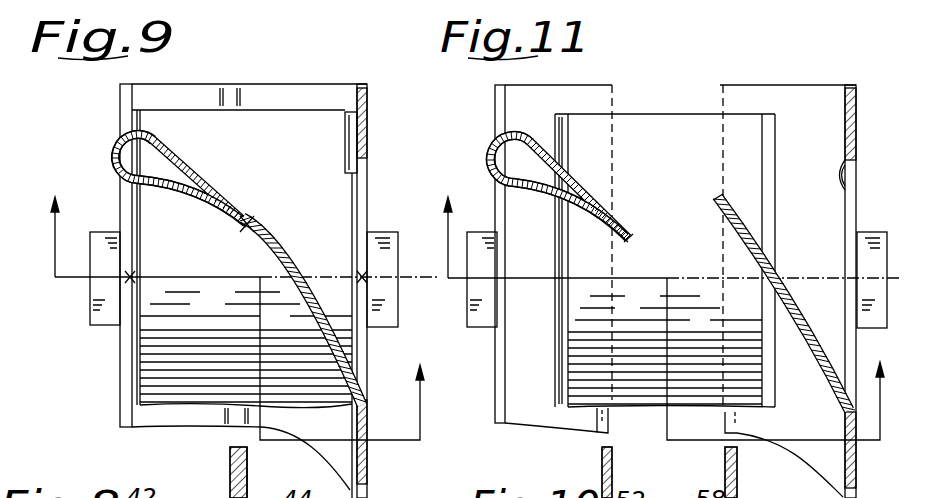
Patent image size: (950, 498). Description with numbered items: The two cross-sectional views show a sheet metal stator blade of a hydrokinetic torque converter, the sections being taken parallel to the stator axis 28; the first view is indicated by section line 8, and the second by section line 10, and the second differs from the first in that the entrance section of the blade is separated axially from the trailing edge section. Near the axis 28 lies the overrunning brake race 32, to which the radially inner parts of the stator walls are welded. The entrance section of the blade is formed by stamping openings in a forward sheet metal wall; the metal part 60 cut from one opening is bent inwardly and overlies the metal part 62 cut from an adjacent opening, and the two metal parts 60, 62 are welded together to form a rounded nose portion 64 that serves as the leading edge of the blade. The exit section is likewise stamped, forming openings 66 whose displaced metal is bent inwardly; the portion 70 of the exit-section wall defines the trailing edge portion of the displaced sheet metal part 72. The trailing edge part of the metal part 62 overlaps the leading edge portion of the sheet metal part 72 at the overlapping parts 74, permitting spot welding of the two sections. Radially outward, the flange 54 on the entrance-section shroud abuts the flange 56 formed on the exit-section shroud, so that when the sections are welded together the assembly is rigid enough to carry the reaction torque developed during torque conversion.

In FIG. 9, the section line 8- 8 is at (236, 301).
In FIG. 11, the hub shell part 10 is at (666, 302).
In FIG. 9, the axis 28 is at (426, 253).
In FIG. 11, the axis 28 is at (826, 253).
In FIG. 9, the overrunning brake race 32 is at (156, 353).
In FIG. 11, the overrunning brake race 32 is at (576, 357).
In FIG. 9, the flange 54 is at (230, 463).
In FIG. 11, the flange 54 is at (612, 478).
In FIG. 9, the flange 56 is at (247, 462).
In FIG. 11, the flange 56 is at (726, 468).
In FIG. 9, the metal part 60 is at (194, 157).
In FIG. 11, the metal part 60 is at (552, 161).
In FIG. 9, the metal part 62 is at (222, 204).
In FIG. 11, the metal part 62 is at (566, 203).
In FIG. 9, the rounded nose portion 64 is at (114, 147).
In FIG. 11, the rounded nose portion 64 is at (488, 157).
In FIG. 9, the opening 66 is at (347, 170).
In FIG. 11, the opening 66 is at (848, 191).
In FIG. 9, the portion of the wall 70 is at (366, 136).
In FIG. 11, the portion of the wall 70 is at (853, 143).
In FIG. 9, the sheet metal part 72 is at (283, 249).
In FIG. 11, the sheet metal part 72 is at (746, 228).
In FIG. 9, the overlapping parts 74 is at (244, 228).
In FIG. 11, the overlapping parts 74 is at (612, 232).